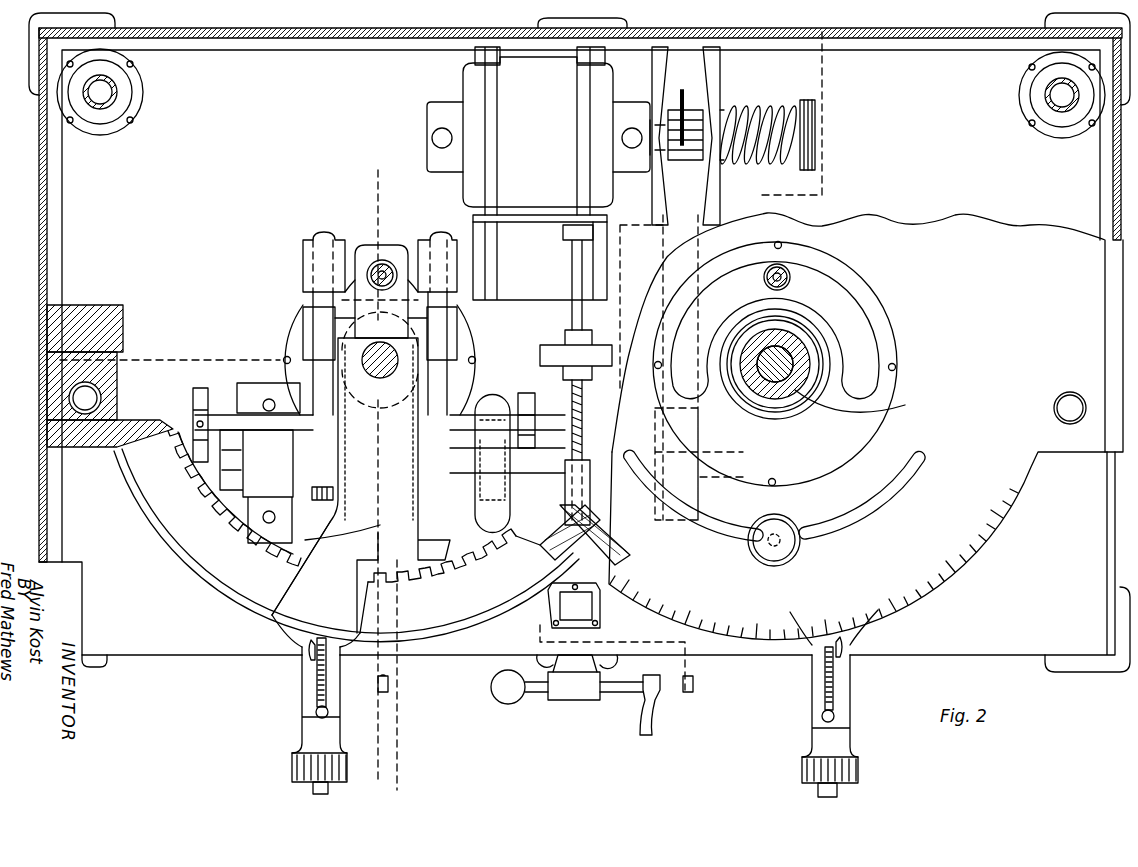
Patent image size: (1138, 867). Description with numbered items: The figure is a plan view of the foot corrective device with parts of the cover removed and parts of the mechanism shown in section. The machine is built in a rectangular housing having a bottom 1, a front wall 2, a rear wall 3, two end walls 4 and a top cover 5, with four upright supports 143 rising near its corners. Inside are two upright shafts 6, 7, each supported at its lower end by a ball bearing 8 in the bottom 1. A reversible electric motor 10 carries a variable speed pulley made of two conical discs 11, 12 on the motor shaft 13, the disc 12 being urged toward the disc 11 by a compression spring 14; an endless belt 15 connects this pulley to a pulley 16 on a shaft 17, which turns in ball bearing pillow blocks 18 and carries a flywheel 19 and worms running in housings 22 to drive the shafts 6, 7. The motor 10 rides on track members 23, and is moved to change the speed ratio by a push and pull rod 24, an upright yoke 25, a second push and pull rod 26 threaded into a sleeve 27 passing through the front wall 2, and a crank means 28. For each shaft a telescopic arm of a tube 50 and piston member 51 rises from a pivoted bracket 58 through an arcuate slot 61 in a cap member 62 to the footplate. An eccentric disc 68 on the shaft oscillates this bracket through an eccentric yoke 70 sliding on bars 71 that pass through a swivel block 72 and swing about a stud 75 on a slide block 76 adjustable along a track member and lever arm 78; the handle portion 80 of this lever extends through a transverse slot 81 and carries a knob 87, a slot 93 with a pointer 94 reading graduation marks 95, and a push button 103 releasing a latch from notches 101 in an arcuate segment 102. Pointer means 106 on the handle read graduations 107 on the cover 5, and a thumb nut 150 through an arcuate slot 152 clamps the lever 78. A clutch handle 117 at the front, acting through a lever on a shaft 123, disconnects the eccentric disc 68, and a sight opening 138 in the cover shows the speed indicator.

The bottom 1 is at (78, 190).
The front wall 2 is at (163, 662).
The rear wall 3 is at (252, 38).
The end walls 4 is at (44, 240).
The cover 5 is at (999, 240).
The upright shaft 6 is at (380, 378).
The upright shaft 7 is at (790, 375).
The ball bearing 8 is at (302, 486).
The reversible electric motor 10 is at (500, 84).
The disc 11 is at (657, 76).
The disc 12 is at (712, 82).
The motor shaft 13 is at (650, 142).
The compression spring 14 is at (783, 105).
The endless belt 15 is at (683, 140).
The pulley 16 is at (690, 488).
The shaft 17 is at (625, 456).
The ball bearing pillow blocks 18 is at (255, 515).
The flywheel 19 is at (508, 522).
The housings 22 is at (296, 352).
The track members 23 is at (560, 282).
The push and pull rod 24 is at (572, 264).
The upright yoke 25 is at (566, 348).
The push and pull rod 26 is at (574, 438).
The sleeve 27 is at (568, 522).
The crank means 28 is at (577, 698).
The tube 50 is at (378, 262).
The piston member 51 is at (385, 264).
The bracket 58 is at (370, 245).
The arcuate slot 61 is at (868, 328).
The cap member 62 is at (855, 414).
The eccentric disc 68 is at (340, 318).
The eccentric yoke 70 is at (305, 330).
The bars 71 is at (448, 440).
The swivel block 72 is at (340, 274).
The stud 75 is at (430, 576).
The slide block 76 is at (328, 508).
The track member and lever arm 78 is at (300, 560).
The handle portion 80 is at (302, 718).
The transverse slot 81 is at (240, 596).
The knob 87 is at (292, 766).
The slot 93 is at (318, 690).
The pointer 94 is at (330, 712).
The graduation marks 95 is at (328, 686).
The notches 101 is at (180, 506).
The arcuate segment 102 is at (178, 484).
The push button 103 is at (313, 790).
The pointer means 106 is at (300, 630).
The graduations 107 is at (938, 588).
The clutch handle 117 is at (388, 682).
The shaft 123 is at (226, 405).
The sight opening 138 is at (548, 612).
The supports 143 is at (100, 400).
The thumb nut 150 is at (792, 545).
The arcuate slot 152 is at (834, 522).